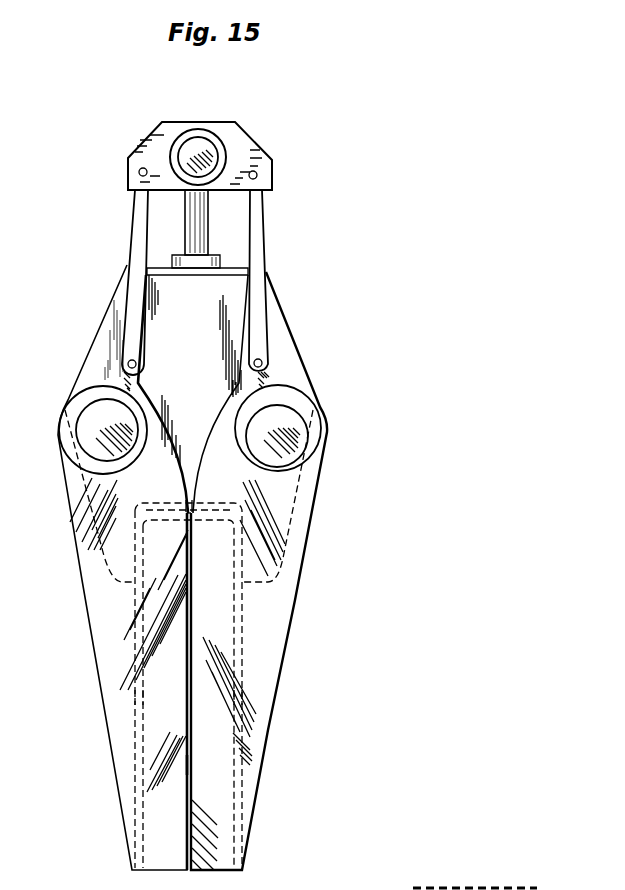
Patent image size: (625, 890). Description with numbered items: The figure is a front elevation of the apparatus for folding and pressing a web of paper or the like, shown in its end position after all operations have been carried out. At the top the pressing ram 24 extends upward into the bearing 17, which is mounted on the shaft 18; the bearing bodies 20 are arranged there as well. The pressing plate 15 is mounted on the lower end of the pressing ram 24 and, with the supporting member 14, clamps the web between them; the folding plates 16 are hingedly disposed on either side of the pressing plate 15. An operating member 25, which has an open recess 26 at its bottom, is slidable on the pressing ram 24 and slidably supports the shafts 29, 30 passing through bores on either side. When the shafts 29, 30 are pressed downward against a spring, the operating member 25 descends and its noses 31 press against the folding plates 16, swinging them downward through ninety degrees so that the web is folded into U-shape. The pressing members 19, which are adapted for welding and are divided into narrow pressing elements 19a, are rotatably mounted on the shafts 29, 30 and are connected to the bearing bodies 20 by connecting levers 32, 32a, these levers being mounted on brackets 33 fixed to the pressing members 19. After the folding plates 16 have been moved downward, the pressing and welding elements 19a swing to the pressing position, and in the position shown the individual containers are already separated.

The supporting member 14 is at (190, 763).
The pressing plate 15 is at (191, 510).
The folding plates 16 is at (137, 697).
The bearing 17 is at (190, 133).
The shaft 18 is at (205, 152).
The pressing members 19 is at (107, 622).
The pressing elements 19a is at (270, 637).
The bearing bodies 20 is at (247, 147).
The pressing ram 24 is at (195, 208).
The operating member 25 is at (277, 337).
The open recess 26 is at (190, 492).
The shaft 29 is at (295, 428).
The shaft 30 is at (90, 418).
The noses 31 is at (112, 560).
The connecting levers 32 is at (135, 208).
The connecting levers 32a is at (255, 222).
The brackets 33 is at (140, 372).